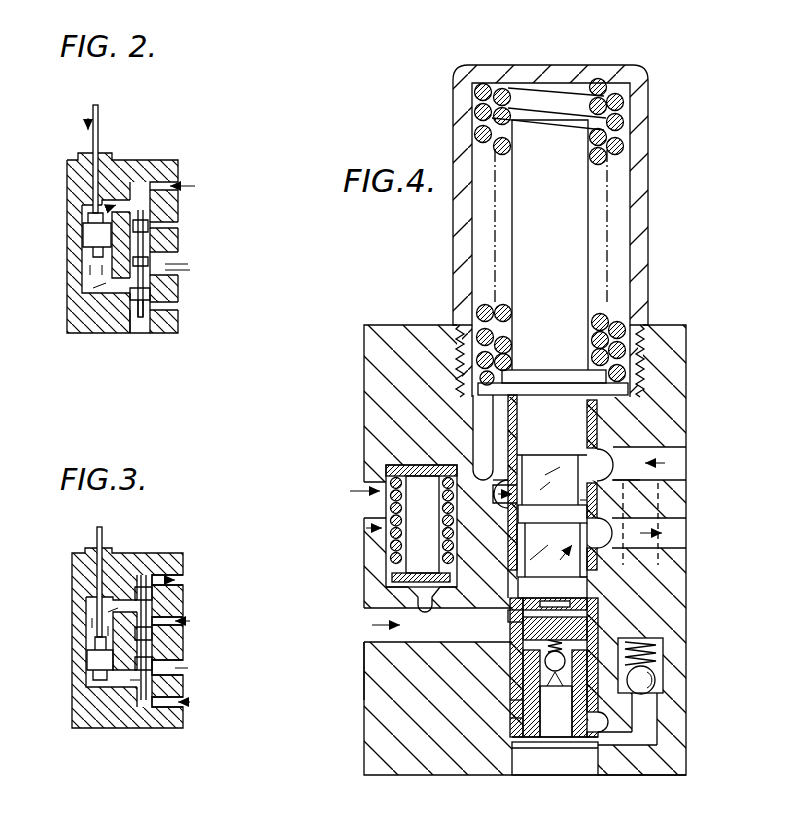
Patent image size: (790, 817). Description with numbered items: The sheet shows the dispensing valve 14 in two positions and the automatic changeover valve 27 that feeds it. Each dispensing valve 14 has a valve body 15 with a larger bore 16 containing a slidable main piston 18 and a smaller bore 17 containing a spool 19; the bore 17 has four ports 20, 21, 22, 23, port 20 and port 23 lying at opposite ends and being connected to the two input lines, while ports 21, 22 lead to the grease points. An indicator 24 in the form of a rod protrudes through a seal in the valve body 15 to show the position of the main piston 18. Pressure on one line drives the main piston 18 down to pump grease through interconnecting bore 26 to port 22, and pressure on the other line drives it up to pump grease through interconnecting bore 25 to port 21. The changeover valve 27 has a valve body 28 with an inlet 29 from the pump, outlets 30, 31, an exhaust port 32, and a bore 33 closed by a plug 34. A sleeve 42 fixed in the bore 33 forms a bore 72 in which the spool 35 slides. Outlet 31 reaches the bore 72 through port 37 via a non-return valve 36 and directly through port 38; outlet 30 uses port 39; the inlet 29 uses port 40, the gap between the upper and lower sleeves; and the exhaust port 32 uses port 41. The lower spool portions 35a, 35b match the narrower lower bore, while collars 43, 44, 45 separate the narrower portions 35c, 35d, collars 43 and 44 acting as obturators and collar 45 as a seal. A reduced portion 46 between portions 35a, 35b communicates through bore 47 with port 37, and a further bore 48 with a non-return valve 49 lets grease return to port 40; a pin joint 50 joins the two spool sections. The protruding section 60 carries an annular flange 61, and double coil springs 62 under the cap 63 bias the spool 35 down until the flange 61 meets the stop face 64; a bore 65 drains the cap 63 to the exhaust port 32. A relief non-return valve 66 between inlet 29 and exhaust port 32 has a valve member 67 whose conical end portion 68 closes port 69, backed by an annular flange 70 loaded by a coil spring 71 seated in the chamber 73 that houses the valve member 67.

In FIG. 2, the dispensing valve 14 is at (64, 280).
In FIG. 2, the valve body 15 is at (148, 163).
In FIG. 3, the valve body 15 is at (132, 560).
In FIG. 2, the bore 16 is at (82, 212).
In FIG. 2, the bore 17 is at (145, 322).
In FIG. 2, the main piston 18 is at (88, 236).
In FIG. 3, the main piston 18 is at (90, 660).
In FIG. 2, the spool 19 is at (143, 218).
In FIG. 3, the spool 19 is at (147, 660).
In FIG. 2, the port 20 is at (186, 185).
In FIG. 3, the port 20 is at (182, 580).
In FIG. 2, the port 21 is at (185, 228).
In FIG. 3, the port 21 is at (184, 622).
In FIG. 2, the port 22 is at (186, 282).
In FIG. 3, the port 22 is at (183, 667).
In FIG. 2, the port 23 is at (186, 317).
In FIG. 3, the port 23 is at (183, 700).
In FIG. 2, the indicator 24 is at (99, 130).
In FIG. 2, the interconnecting bore 25 is at (118, 200).
In FIG. 2, the interconnecting bore 26 is at (134, 322).
In FIG. 4, the automatic changeover valve 27 is at (696, 368).
In FIG. 4, the valve body 28 is at (402, 320).
In FIG. 4, the inlet 29 is at (362, 638).
In FIG. 4, the outlet 30 is at (650, 540).
In FIG. 4, the outlet 31 is at (676, 462).
In FIG. 4, the exhaust port 32 is at (366, 490).
In FIG. 4, the bore 33 is at (512, 700).
In FIG. 4, the plug 34 is at (560, 776).
In FIG. 4, the spool 35 is at (438, 625).
In FIG. 4, the lower portion of spool 35a is at (612, 745).
In FIG. 4, the lower portion of spool 35b is at (530, 660).
In FIG. 4, the narrower portion of spool 35c is at (520, 540).
In FIG. 4, the narrower portion of spool 35d is at (530, 470).
In FIG. 4, the non-return valve 36 is at (656, 683).
In FIG. 4, the port 37 is at (642, 790).
In FIG. 4, the port 38 is at (600, 456).
In FIG. 4, the port 39 is at (598, 548).
In FIG. 4, the port 40 is at (518, 608).
In FIG. 4, the port 41 is at (496, 494).
In FIG. 4, the sleeve 42 is at (512, 718).
In FIG. 4, the collar 43 is at (547, 596).
In FIG. 4, the collar 44 is at (557, 516).
In FIG. 4, the collar 45 is at (527, 380).
In FIG. 4, the portion of reduced diameter 46 is at (606, 722).
In FIG. 4, the bore 47 is at (548, 742).
In FIG. 4, the bore 48 is at (575, 630).
In FIG. 4, the non-return valve 49 is at (555, 688).
In FIG. 4, the pin joint 50 is at (515, 616).
In FIG. 4, the protruding section 60 is at (575, 233).
In FIG. 4, the annular flange 61 is at (567, 390).
In FIG. 4, the double coil springs 62 is at (618, 126).
In FIG. 4, the cap 63 is at (535, 65).
In FIG. 4, the face 64 is at (592, 400).
In FIG. 4, the bore 65 is at (483, 420).
In FIG. 4, the non-return valve 66 is at (366, 528).
In FIG. 4, the valve member 67 is at (410, 547).
In FIG. 4, the conical end portion 68 is at (418, 600).
In FIG. 4, the port 69 is at (405, 607).
In FIG. 4, the annular flange 70 is at (400, 584).
In FIG. 4, the coil spring 71 is at (392, 470).
In FIG. 4, the bore 72 is at (600, 504).
In FIG. 4, the chamber 73 is at (390, 580).